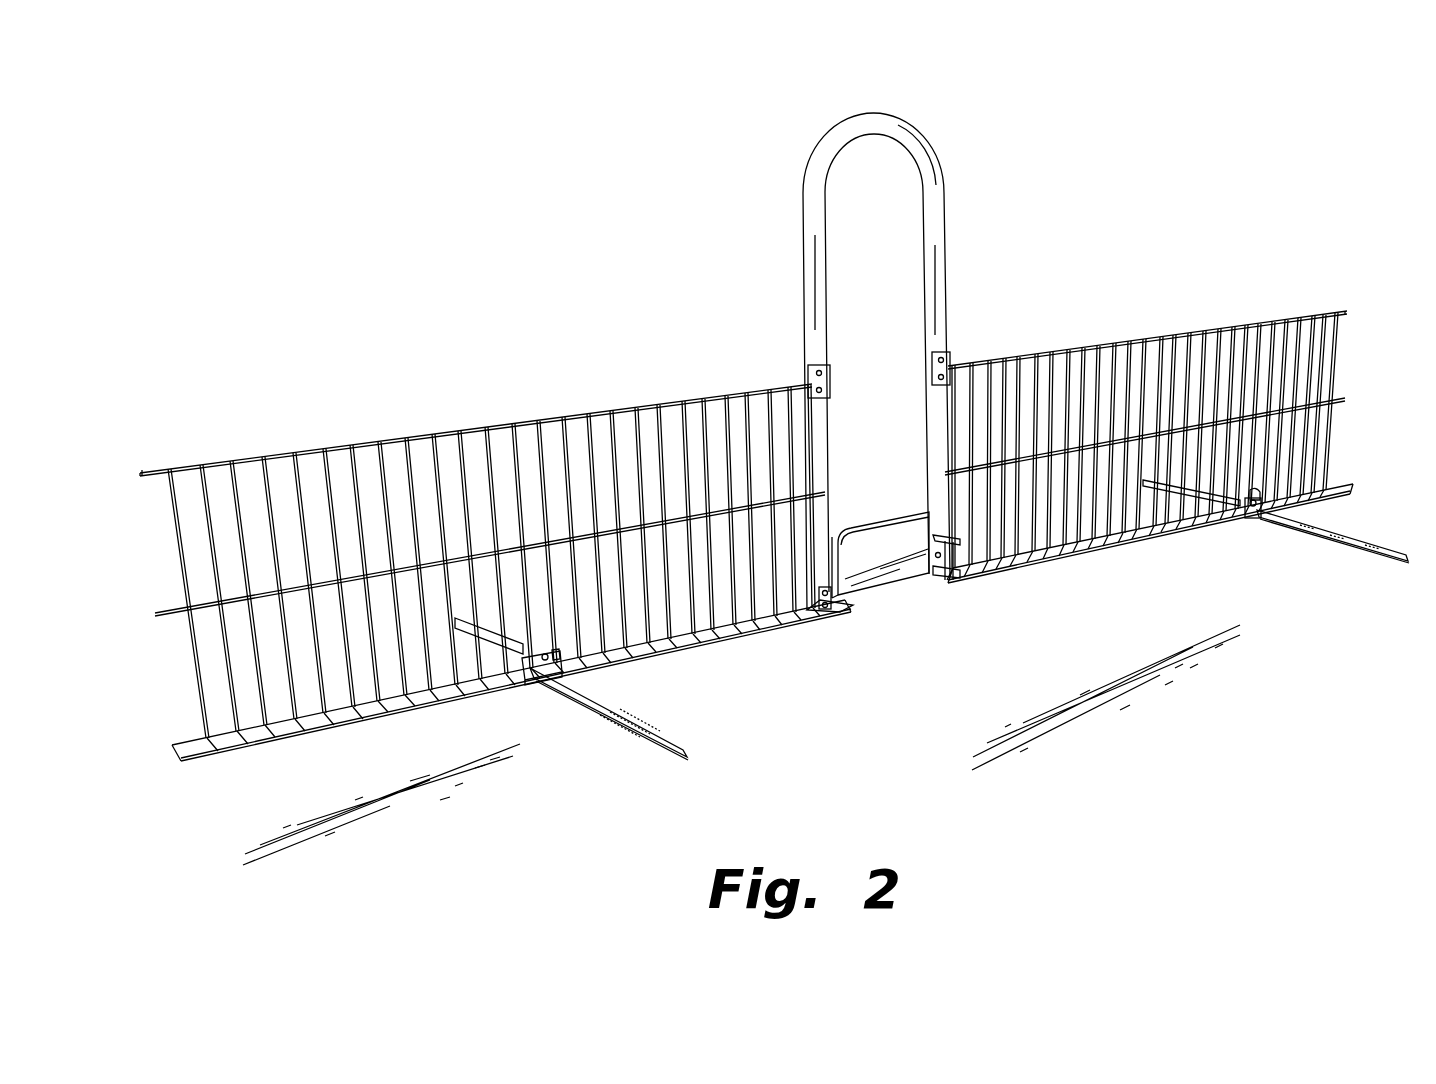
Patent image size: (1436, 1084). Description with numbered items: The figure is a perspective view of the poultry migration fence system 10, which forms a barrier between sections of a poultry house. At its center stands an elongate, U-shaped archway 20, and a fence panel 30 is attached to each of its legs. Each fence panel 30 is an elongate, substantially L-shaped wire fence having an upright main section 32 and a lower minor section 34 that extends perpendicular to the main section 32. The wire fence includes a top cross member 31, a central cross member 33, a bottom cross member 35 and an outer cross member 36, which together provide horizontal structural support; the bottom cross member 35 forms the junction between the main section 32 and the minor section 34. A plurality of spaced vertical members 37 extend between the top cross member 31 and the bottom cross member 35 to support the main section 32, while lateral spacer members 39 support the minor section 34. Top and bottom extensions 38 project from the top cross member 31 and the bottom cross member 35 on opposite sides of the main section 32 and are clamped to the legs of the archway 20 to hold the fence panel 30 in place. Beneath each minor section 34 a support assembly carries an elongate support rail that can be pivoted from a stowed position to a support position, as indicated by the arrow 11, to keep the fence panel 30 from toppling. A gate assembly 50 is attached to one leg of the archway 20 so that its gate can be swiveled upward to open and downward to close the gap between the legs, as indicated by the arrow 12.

The poultry migration fence system 10 is at (638, 277).
The arrow 11 is at (548, 752).
The arrow 12 is at (888, 498).
The archway 20 is at (962, 203).
The fence panel 30 is at (466, 420).
The top cross member 31 is at (383, 441).
The main section 32 is at (168, 568).
The central cross member 33 is at (232, 580).
The minor section 34 is at (170, 768).
The bottom cross member 35 is at (402, 716).
The outer cross member 36 is at (208, 762).
The vertical members 37 is at (318, 477).
The extensions 38 is at (140, 470).
The lateral spacer members 39 is at (300, 738).
The gate assembly 50 is at (917, 618).